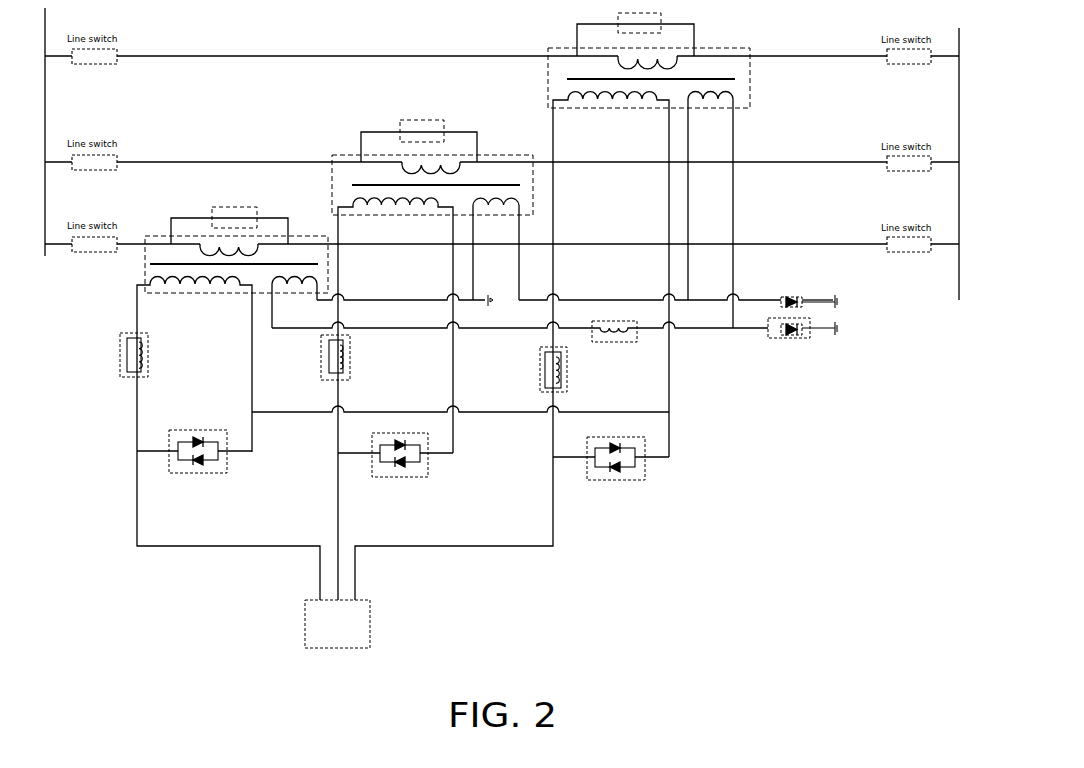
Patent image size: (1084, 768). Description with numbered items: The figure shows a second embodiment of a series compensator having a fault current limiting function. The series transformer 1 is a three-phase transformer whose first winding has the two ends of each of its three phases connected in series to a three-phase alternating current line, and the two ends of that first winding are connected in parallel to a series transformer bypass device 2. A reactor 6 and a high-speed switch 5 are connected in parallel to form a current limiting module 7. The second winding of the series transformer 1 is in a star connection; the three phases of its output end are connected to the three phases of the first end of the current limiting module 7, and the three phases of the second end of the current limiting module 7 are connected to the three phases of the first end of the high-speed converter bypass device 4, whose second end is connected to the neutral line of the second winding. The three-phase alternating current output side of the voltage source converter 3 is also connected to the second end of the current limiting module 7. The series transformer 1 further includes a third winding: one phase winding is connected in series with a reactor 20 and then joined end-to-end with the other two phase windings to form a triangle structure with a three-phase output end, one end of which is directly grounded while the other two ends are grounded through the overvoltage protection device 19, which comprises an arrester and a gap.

The series transformer 1 is at (193, 235).
The series transformer bypass device 2 is at (240, 210).
The voltage source converter 3 is at (302, 640).
The high-speed converter bypass device 4 is at (232, 457).
The high-speed switch 5 is at (127, 352).
The reactor 6 is at (142, 351).
The current limiting module 7 is at (134, 364).
The overvoltage protection device 19 is at (808, 338).
The reactor 20 is at (615, 335).